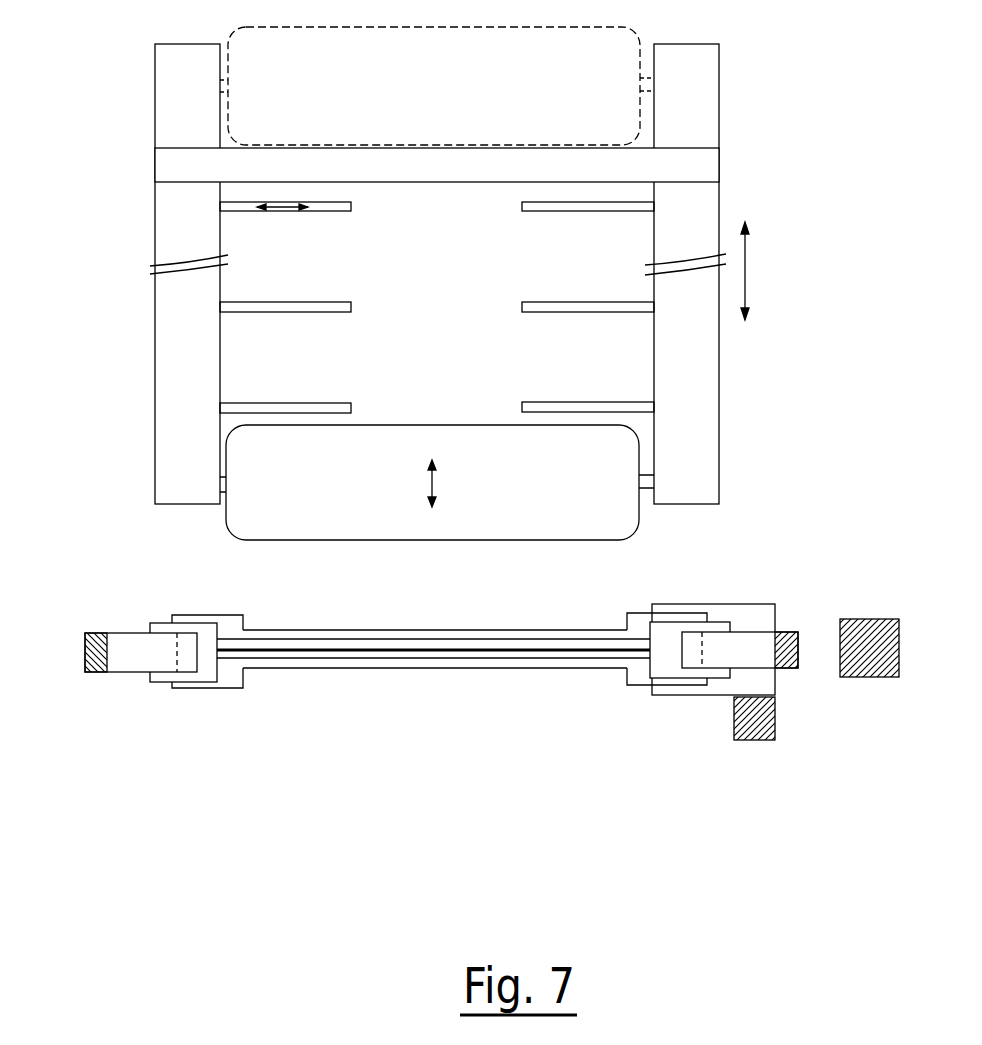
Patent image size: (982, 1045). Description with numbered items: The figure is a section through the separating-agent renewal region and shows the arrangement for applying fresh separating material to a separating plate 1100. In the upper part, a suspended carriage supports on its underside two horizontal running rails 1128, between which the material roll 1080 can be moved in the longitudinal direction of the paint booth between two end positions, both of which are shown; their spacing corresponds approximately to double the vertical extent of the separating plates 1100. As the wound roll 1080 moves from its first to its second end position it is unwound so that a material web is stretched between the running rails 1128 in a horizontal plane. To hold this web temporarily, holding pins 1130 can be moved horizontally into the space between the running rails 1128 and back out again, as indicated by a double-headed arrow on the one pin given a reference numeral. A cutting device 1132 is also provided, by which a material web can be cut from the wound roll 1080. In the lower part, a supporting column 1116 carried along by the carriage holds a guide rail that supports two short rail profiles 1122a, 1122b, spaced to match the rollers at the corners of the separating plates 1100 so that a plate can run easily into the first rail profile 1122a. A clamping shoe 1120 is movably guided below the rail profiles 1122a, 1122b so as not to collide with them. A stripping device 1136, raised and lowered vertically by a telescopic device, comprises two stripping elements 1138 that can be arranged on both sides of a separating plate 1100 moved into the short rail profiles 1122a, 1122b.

The running rails 1128 is at (178, 413).
The cutting device 1132 is at (700, 170).
The holding pins 1130 is at (337, 211).
The material roll 1080 is at (480, 455).
The separating plate 1100 is at (413, 639).
The stripping elements 1138 is at (635, 627).
The stripping device 1136 is at (480, 668).
The clamping shoe 1120 is at (767, 588).
The supporting column 1116 is at (853, 635).
The first rail profile 1122a is at (205, 670).
The second rail profile 1122b is at (670, 660).